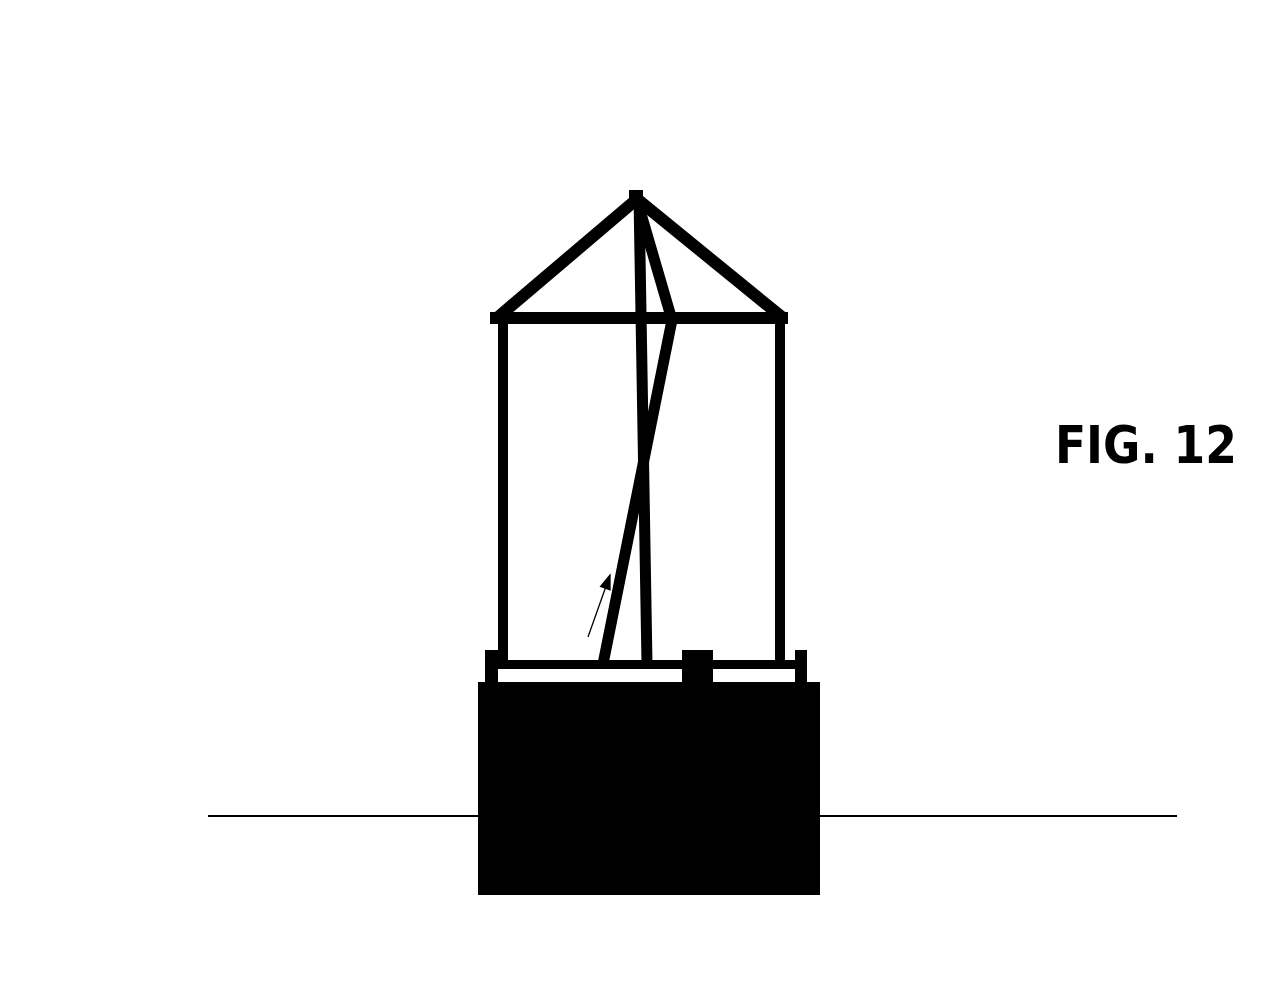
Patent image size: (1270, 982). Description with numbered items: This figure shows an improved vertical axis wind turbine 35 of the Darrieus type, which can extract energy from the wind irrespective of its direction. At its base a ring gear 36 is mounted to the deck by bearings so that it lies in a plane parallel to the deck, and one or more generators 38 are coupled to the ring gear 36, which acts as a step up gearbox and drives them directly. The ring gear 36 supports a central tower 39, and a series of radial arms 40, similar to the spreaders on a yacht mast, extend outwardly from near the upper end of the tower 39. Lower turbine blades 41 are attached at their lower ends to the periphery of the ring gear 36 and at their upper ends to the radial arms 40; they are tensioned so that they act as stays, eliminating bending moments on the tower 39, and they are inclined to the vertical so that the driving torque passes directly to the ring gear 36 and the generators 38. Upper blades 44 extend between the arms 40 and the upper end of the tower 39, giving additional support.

The wind turbine 35 is at (797, 178).
The ring gear 36 is at (546, 641).
The generator 38 is at (817, 710).
The central tower 39 is at (665, 593).
The radial arm 40 is at (555, 305).
The lower turbine blade 41 is at (530, 438).
The upper blade 44 is at (685, 208).